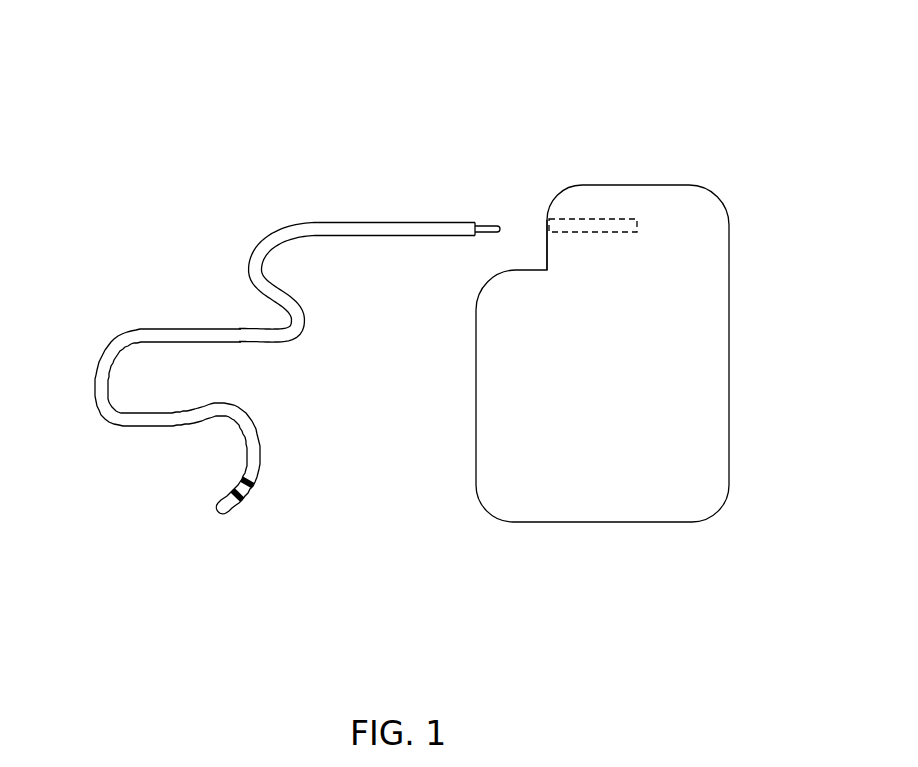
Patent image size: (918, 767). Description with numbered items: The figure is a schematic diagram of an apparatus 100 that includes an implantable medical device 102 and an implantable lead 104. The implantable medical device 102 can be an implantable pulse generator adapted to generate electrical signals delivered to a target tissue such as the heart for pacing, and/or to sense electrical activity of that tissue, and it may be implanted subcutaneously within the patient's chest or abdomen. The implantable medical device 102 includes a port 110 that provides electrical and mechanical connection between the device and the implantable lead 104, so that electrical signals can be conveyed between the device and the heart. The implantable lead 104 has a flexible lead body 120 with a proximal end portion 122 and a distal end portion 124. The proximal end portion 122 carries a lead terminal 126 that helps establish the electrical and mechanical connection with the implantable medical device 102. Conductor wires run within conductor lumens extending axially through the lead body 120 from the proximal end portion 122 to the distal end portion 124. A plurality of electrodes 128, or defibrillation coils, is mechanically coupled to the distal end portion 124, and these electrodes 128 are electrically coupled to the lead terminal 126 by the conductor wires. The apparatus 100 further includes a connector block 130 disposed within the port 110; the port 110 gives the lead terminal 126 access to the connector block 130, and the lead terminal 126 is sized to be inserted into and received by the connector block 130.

The apparatus 100 is at (720, 90).
The implantable medical device 102 is at (738, 410).
The implantable lead 104 is at (247, 241).
The port 110 is at (570, 228).
The flexible lead body 120 is at (300, 322).
The proximal end portion 122 is at (408, 228).
The distal end portion 124 is at (253, 435).
The lead terminal 126 is at (487, 222).
The electrodes 128 is at (255, 488).
The connector block 130 is at (597, 227).